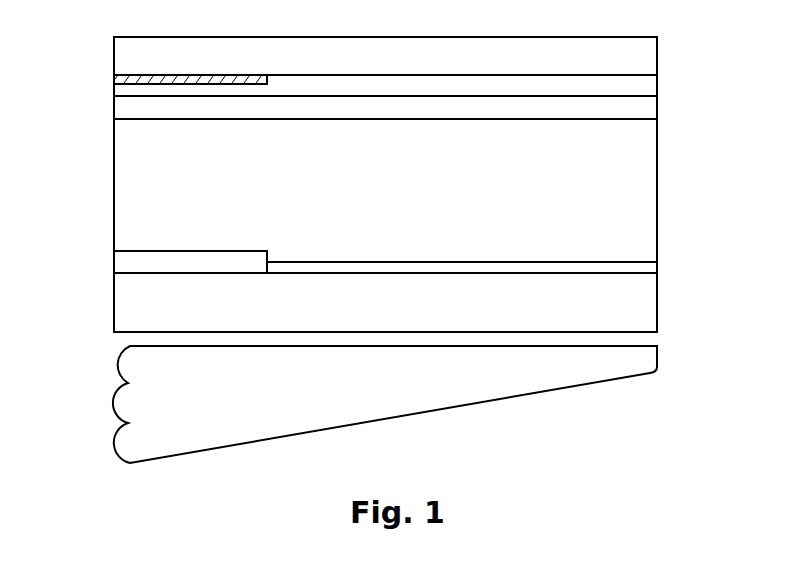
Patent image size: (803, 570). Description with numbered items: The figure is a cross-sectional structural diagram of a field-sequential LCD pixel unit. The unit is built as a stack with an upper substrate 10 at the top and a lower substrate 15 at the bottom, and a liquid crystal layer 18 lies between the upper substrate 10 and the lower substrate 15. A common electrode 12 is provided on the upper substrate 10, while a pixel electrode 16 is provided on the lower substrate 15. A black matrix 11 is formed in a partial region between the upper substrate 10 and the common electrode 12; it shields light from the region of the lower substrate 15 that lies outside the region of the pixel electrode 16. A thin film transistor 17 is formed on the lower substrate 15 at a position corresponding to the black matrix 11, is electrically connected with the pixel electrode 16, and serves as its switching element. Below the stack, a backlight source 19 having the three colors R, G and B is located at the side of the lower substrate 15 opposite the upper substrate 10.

The upper substrate 10 is at (620, 54).
The black matrix 11 is at (150, 80).
The common electrode 12 is at (620, 110).
The lower substrate 15 is at (620, 303).
The pixel electrode 16 is at (620, 267).
The thin film transistor 17 is at (158, 264).
The liquid crystal layer 18 is at (620, 182).
The backlight source 19 is at (620, 361).